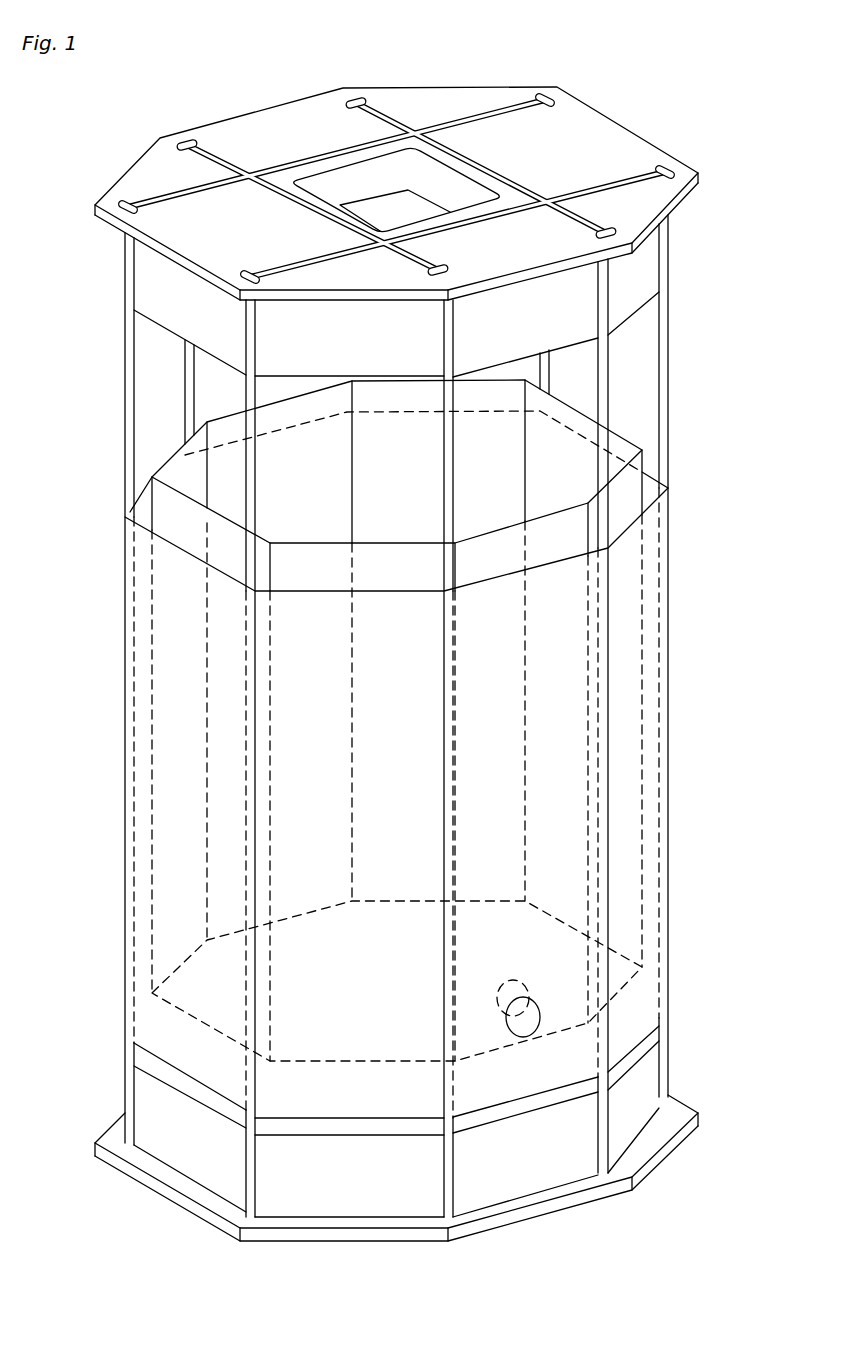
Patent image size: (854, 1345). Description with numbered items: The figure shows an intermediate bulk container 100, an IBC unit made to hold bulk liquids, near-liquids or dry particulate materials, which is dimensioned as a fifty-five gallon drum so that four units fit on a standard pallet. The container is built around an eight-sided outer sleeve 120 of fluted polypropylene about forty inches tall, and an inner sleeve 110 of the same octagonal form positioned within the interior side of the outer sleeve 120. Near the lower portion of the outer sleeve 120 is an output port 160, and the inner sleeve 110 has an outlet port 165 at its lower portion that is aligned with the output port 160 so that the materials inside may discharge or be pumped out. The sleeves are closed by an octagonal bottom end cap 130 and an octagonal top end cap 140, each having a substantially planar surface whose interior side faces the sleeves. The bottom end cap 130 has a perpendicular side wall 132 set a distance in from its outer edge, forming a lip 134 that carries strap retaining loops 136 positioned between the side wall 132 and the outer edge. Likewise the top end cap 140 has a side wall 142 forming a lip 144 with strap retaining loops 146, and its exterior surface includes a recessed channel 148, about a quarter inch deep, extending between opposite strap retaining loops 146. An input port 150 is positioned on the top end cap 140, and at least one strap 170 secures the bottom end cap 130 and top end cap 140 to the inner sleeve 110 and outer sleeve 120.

The intermediate bulk container 100 is at (408, 653).
The inner sleeve 110 is at (171, 453).
The outer sleeve 120 is at (668, 540).
The bottom end cap 130 is at (525, 1220).
The side wall 132 is at (643, 1083).
The lip 134 is at (653, 1142).
The strap retaining loop 136 is at (123, 1157).
The top end cap 140 is at (588, 132).
The side wall 142 is at (657, 258).
The lip 144 is at (690, 194).
The strap retaining loop 146 is at (190, 145).
The recessed channel 148 is at (380, 101).
The input port 150 is at (400, 172).
The output port 160 is at (510, 1015).
The outlet port 165 is at (520, 977).
The strap 170 is at (668, 386).